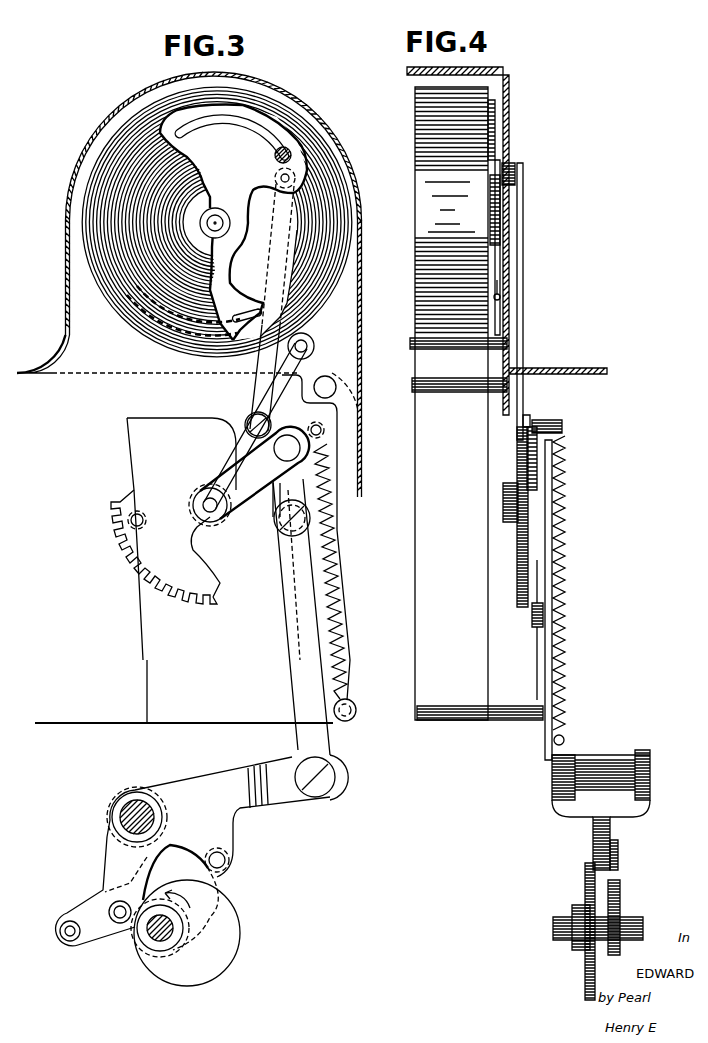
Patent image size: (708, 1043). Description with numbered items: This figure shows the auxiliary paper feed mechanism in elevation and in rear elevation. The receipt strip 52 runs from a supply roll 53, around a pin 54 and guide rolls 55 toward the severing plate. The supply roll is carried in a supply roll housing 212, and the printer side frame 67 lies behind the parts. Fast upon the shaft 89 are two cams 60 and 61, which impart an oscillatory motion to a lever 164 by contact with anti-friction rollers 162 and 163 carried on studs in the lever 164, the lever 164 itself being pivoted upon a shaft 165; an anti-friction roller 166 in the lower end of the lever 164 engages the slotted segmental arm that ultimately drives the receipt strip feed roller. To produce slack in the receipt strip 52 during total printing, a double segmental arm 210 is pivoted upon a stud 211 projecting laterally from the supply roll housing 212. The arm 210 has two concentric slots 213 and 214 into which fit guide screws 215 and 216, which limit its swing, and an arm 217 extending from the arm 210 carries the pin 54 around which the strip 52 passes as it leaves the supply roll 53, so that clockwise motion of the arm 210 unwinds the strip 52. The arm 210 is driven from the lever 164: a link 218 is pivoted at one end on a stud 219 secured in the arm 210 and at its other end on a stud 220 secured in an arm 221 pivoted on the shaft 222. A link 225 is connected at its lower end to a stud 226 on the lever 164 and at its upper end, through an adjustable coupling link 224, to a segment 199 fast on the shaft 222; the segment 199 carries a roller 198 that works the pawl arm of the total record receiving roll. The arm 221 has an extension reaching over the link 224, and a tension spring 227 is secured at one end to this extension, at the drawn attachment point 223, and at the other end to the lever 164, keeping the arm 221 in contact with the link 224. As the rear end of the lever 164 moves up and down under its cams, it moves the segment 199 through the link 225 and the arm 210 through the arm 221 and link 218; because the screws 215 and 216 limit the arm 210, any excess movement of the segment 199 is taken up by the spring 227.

In FIG. 3, the receipt strip 52 is at (346, 568).
In FIG. 4, the receipt strip 52 is at (432, 554).
In FIG. 3, the supply roll 53 is at (132, 328).
In FIG. 4, the supply roll 53 is at (434, 105).
In FIG. 3, the pin 54 is at (314, 345).
In FIG. 4, the pin 54 is at (430, 342).
In FIG. 3, the guide rolls 55 is at (330, 380).
In FIG. 4, the guide rolls 55 is at (413, 388).
In FIG. 3, the cam 60 is at (226, 960).
In FIG. 4, the cam 60 is at (584, 887).
In FIG. 3, the cam 61 is at (135, 880).
In FIG. 4, the cam 61 is at (621, 897).
In FIG. 4, the printer side frame 67 is at (534, 670).
In FIG. 3, the shaft 89 is at (152, 944).
In FIG. 4, the shaft 89 is at (556, 942).
In FIG. 3, the anti-friction roller 162 is at (109, 915).
In FIG. 3, the anti-friction roller 163 is at (230, 861).
In FIG. 4, the anti-friction roller 163 is at (618, 848).
In FIG. 3, the lever 164 is at (210, 784).
In FIG. 4, the lever 164 is at (650, 802).
In FIG. 3, the shaft 165 is at (122, 814).
In FIG. 3, the anti-friction roller 166 is at (66, 942).
In FIG. 3, the roller 198 is at (130, 523).
In FIG. 4, the roller 198 is at (510, 502).
In FIG. 3, the segment 199 is at (164, 500).
In FIG. 4, the segment 199 is at (516, 568).
In FIG. 3, the double segmental arm 210 is at (213, 285).
In FIG. 4, the double segmental arm 210 is at (497, 312).
In FIG. 3, the stud 211 is at (216, 216).
In FIG. 4, the stud 211 is at (501, 252).
In FIG. 4, the supply roll housing 212 is at (510, 134).
In FIG. 3, the concentric slot 213 is at (217, 128).
In FIG. 3, the concentric slot 214 is at (244, 314).
In FIG. 3, the guide screw 215 is at (274, 156).
In FIG. 4, the guide screw 215 is at (489, 160).
In FIG. 3, the guide screw 216 is at (190, 270).
In FIG. 4, the guide screw 216 is at (501, 300).
In FIG. 3, the arm 217 is at (308, 338).
In FIG. 3, the link 218 is at (276, 206).
In FIG. 4, the link 218 is at (524, 288).
In FIG. 3, the stud 219 is at (281, 178).
In FIG. 4, the stud 219 is at (514, 165).
In FIG. 3, the stud 220 is at (249, 420).
In FIG. 3, the arm 221 is at (238, 452).
In FIG. 3, the shaft 222 is at (200, 511).
In FIG. 3, the screw 223 is at (322, 434).
In FIG. 4, the screw 223 is at (555, 426).
In FIG. 3, the adjustable coupling link 224 is at (272, 502).
In FIG. 4, the adjustable coupling link 224 is at (526, 472).
In FIG. 3, the link 225 is at (286, 572).
In FIG. 4, the link 225 is at (546, 744).
In FIG. 3, the stud 226 is at (335, 802).
In FIG. 3, the tension spring 227 is at (328, 532).
In FIG. 4, the tension spring 227 is at (566, 489).